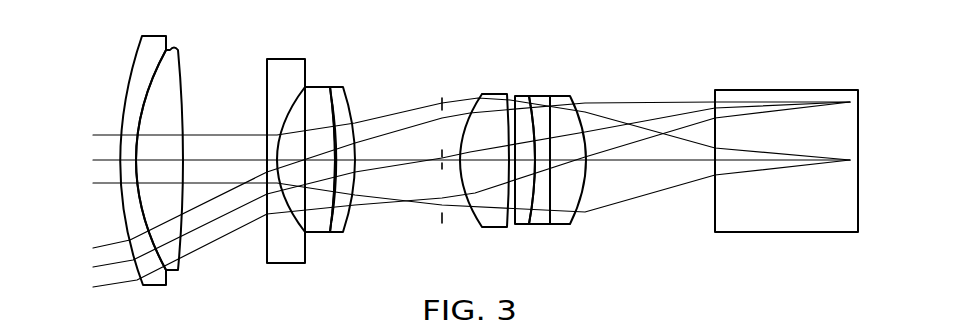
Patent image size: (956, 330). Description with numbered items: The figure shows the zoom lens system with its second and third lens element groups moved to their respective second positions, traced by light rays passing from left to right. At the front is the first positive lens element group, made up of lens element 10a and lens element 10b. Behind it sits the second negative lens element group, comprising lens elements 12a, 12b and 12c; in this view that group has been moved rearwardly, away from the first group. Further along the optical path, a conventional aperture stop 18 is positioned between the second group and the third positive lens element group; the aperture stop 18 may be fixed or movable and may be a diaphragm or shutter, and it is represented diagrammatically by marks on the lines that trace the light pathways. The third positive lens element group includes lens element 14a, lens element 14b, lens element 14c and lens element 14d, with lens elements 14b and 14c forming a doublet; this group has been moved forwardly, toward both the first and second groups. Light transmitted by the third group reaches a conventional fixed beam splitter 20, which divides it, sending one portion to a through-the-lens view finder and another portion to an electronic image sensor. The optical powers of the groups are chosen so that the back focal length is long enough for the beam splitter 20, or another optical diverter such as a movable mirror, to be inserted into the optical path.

The lens element 10a is at (153, 285).
The lens element 10b is at (171, 68).
The lens element 12a is at (273, 59).
The lens element 12b is at (318, 232).
The lens element 12c is at (338, 87).
The lens element 14a is at (490, 94).
The lens element 14b is at (518, 228).
The lens element 14c is at (537, 96).
The lens element 14d is at (572, 96).
The aperture stop 18 is at (424, 238).
The beam splitter 20 is at (760, 232).